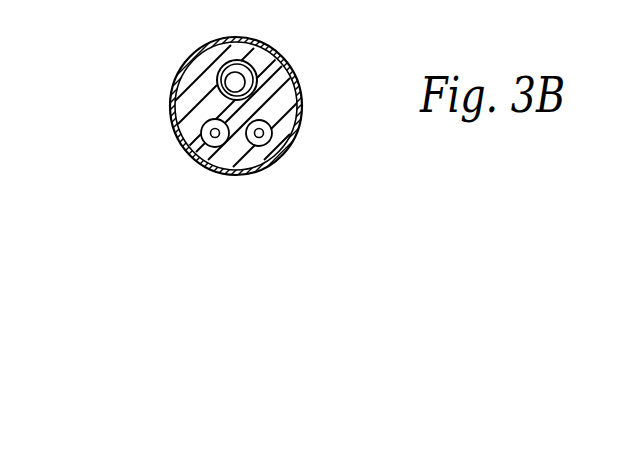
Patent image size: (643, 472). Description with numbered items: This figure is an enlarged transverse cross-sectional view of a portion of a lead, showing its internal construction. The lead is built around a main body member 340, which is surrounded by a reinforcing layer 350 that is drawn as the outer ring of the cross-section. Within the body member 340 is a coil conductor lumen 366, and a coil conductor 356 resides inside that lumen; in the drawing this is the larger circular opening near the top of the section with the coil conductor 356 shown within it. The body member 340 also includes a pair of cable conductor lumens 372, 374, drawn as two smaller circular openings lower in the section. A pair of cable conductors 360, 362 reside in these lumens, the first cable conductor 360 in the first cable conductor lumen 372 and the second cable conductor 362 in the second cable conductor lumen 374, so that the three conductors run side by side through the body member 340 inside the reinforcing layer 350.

The main body member 340 is at (296, 97).
The reinforcing layer 350 is at (298, 124).
The coil conductor 356 is at (266, 56).
The cable conductor 360 is at (206, 145).
The cable conductor 362 is at (267, 143).
The coil conductor lumen 366 is at (213, 85).
The cable conductor lumen 372 is at (210, 134).
The cable conductor lumen 374 is at (264, 133).